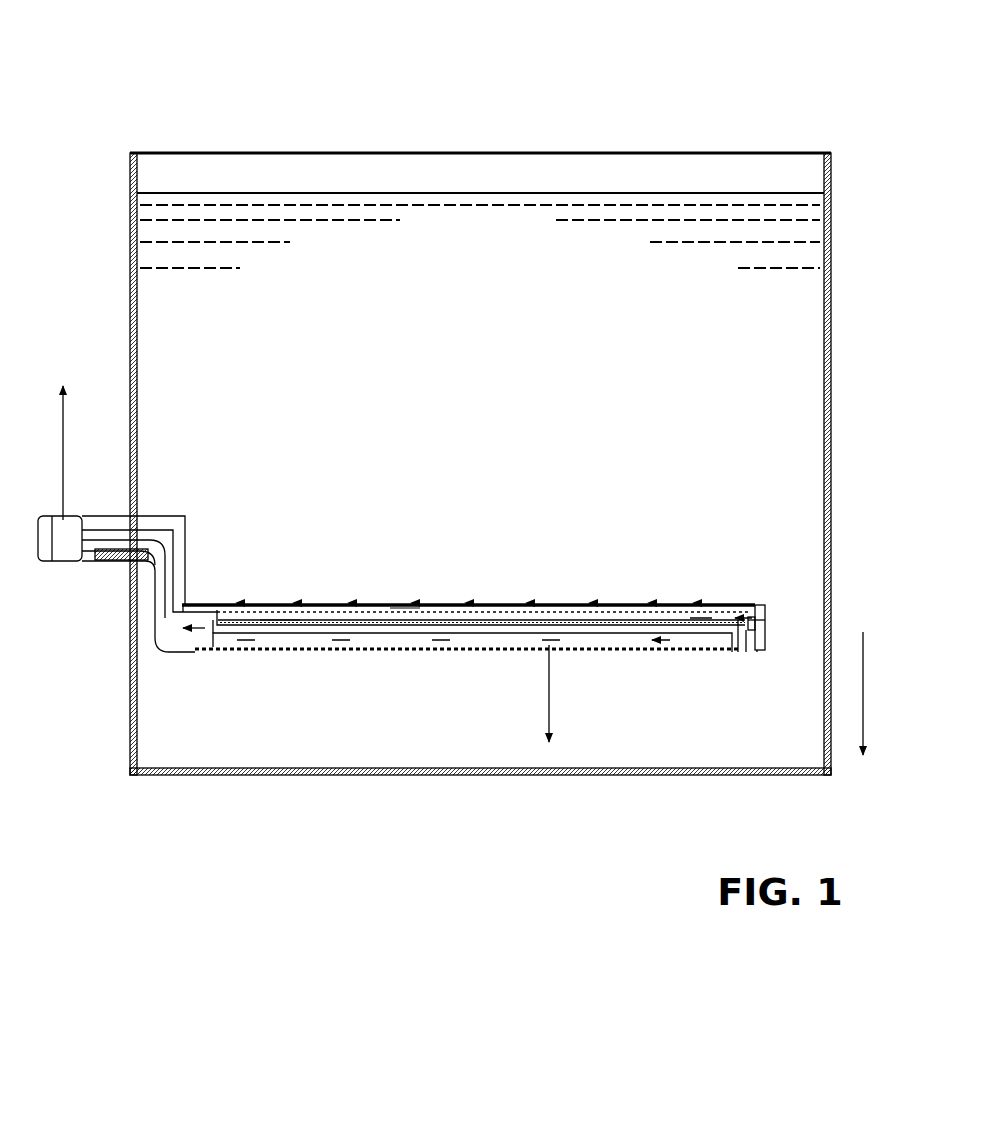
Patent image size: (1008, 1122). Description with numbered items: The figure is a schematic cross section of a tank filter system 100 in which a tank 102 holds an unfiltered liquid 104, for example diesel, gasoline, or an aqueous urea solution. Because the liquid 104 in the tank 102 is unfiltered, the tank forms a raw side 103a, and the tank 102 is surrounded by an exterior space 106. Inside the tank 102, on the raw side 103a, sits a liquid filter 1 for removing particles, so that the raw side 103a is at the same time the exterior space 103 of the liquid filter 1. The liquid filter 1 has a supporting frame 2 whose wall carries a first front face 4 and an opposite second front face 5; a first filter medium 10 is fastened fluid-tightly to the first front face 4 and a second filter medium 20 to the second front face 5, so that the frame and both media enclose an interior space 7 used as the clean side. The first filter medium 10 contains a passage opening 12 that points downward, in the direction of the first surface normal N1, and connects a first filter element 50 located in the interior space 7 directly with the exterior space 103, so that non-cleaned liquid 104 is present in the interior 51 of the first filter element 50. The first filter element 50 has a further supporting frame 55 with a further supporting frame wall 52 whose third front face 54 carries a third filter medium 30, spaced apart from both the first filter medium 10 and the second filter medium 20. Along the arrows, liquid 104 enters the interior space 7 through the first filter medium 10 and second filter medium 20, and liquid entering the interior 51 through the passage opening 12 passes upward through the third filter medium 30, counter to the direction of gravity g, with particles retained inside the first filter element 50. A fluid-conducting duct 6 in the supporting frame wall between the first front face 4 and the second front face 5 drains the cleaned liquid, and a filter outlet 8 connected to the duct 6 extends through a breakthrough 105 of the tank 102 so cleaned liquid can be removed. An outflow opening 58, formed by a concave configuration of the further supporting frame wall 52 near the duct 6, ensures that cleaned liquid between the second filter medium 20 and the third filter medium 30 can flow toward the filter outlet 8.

The tank filter system 100 is at (765, 146).
The tank 102 is at (136, 222).
The exterior space of liquid filter 103 is at (558, 398).
The raw side 103a is at (370, 398).
The liquid 104 is at (580, 191).
The breakthrough 105 is at (123, 567).
The exterior space of tank 106 is at (890, 398).
The liquid filter 1 is at (400, 658).
The supporting frame 2 is at (773, 621).
The first front face 4 is at (732, 652).
The second front face 5 is at (760, 603).
The fluid-conducting duct 6 is at (178, 650).
The interior space 7 is at (278, 651).
The filter outlet 8 is at (168, 612).
The first filter medium 10 is at (472, 650).
The passage opening 12 is at (741, 652).
The second filter medium 20 is at (652, 603).
The third filter medium 30 is at (490, 603).
The first filter element 50 is at (360, 636).
The interior of first filter element 51 is at (407, 603).
The further supporting frame wall 52 is at (214, 636).
The third front face 54 is at (226, 610).
The further supporting frame 55 is at (325, 603).
The outflow opening 58 is at (203, 603).
The first surface normal N1 is at (571, 693).
The direction of gravity g is at (876, 693).